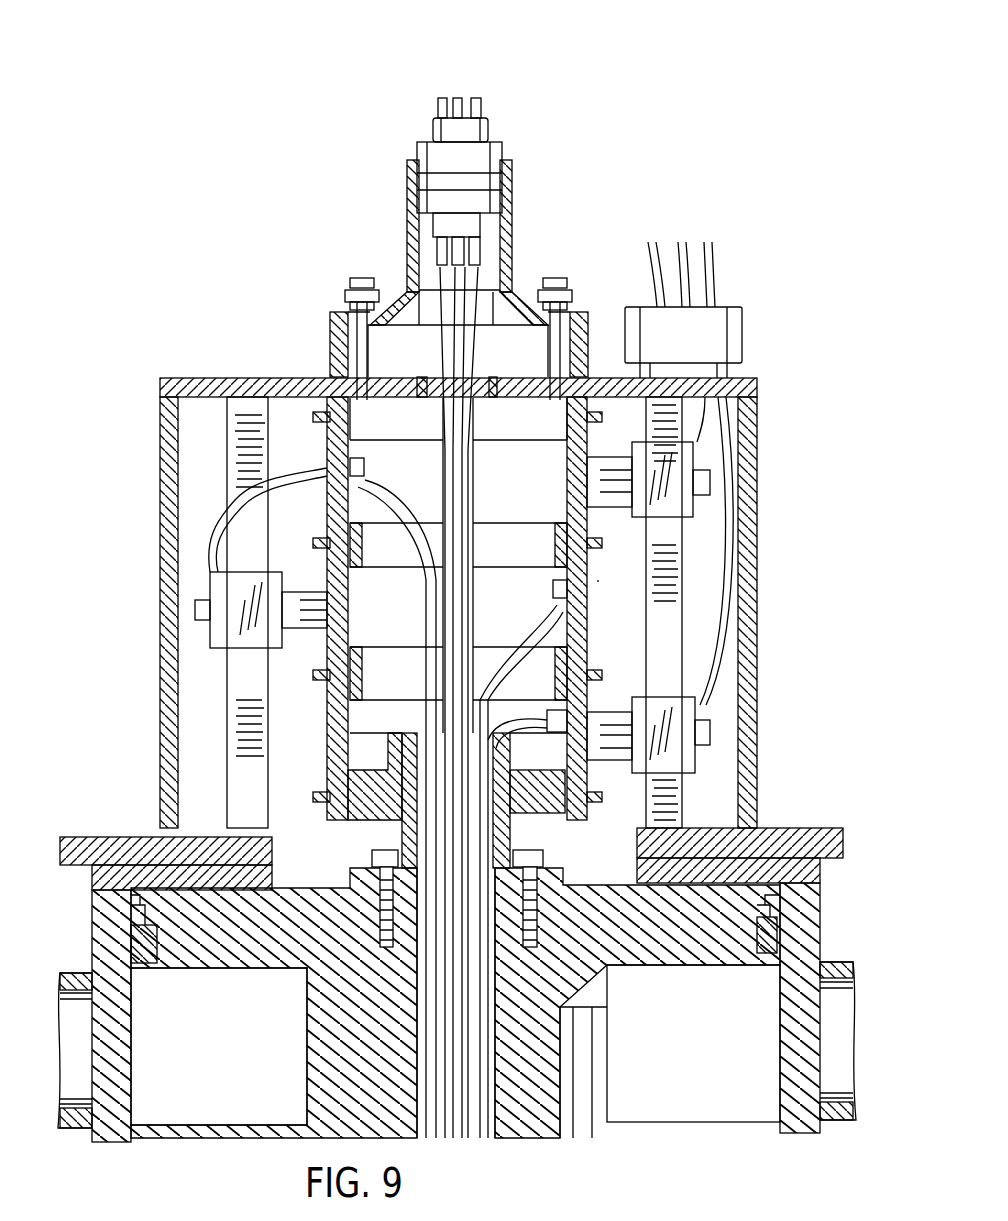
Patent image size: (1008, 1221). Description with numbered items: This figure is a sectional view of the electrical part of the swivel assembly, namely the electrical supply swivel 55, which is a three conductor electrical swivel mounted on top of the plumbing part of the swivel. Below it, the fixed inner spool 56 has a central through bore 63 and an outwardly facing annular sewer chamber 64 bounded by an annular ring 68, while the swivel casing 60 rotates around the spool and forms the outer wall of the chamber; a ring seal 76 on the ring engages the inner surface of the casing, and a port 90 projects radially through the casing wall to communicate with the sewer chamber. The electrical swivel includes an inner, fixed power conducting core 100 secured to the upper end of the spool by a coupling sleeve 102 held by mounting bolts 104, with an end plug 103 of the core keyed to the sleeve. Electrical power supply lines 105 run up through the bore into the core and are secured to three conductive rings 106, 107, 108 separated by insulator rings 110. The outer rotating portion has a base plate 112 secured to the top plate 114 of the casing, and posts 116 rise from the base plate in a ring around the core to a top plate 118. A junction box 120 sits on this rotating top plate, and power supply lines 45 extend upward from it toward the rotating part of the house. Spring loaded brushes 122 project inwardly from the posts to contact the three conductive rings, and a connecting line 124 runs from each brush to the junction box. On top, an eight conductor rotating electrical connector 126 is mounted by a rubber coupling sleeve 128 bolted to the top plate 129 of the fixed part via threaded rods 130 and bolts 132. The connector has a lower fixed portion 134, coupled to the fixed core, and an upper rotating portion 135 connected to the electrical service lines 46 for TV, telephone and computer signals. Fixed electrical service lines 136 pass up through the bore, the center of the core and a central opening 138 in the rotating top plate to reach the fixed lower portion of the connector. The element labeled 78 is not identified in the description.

The power supply lines 45 is at (708, 242).
The electrical service lines 46 is at (476, 97).
The electrical supply swivel 55 is at (768, 503).
The fixed inner spool 56 is at (315, 1058).
The swivel casing 60 is at (108, 935).
The central through bore 63 is at (417, 1092).
The sewer chamber 64 is at (716, 1080).
The annular ring 68 is at (678, 948).
The ring seal 76 is at (172, 968).
The port 78 is at (595, 1122).
The port 90 is at (70, 1122).
The power conducting core 100 is at (610, 578).
The coupling sleeve 102 is at (558, 866).
The end plug 103 is at (405, 758).
The mounting bolts 104 is at (370, 856).
The electrical power supply lines 105 is at (527, 642).
The conductive ring 106 is at (568, 463).
The conductive ring 107 is at (347, 612).
The conductive ring 108 is at (342, 740).
The insulator rings 110 is at (323, 420).
The base plate 112 is at (742, 833).
The top plate 114 is at (812, 868).
The posts 116 is at (245, 705).
The top plate 118 is at (752, 388).
The junction box 120 is at (744, 317).
The spring loaded brushes 122 is at (592, 488).
The connecting line 124 is at (200, 512).
The rotating electrical connector 126 is at (515, 127).
The rubber coupling sleeve 128 is at (586, 312).
The top plate 129 is at (400, 398).
The threaded rods 130 is at (355, 342).
The bolts 132 is at (357, 290).
The lower fixed portion 134 is at (490, 200).
The upper rotating portion 135 is at (432, 125).
The fixed electrical service lines 136 is at (458, 425).
The central opening 138 is at (437, 378).